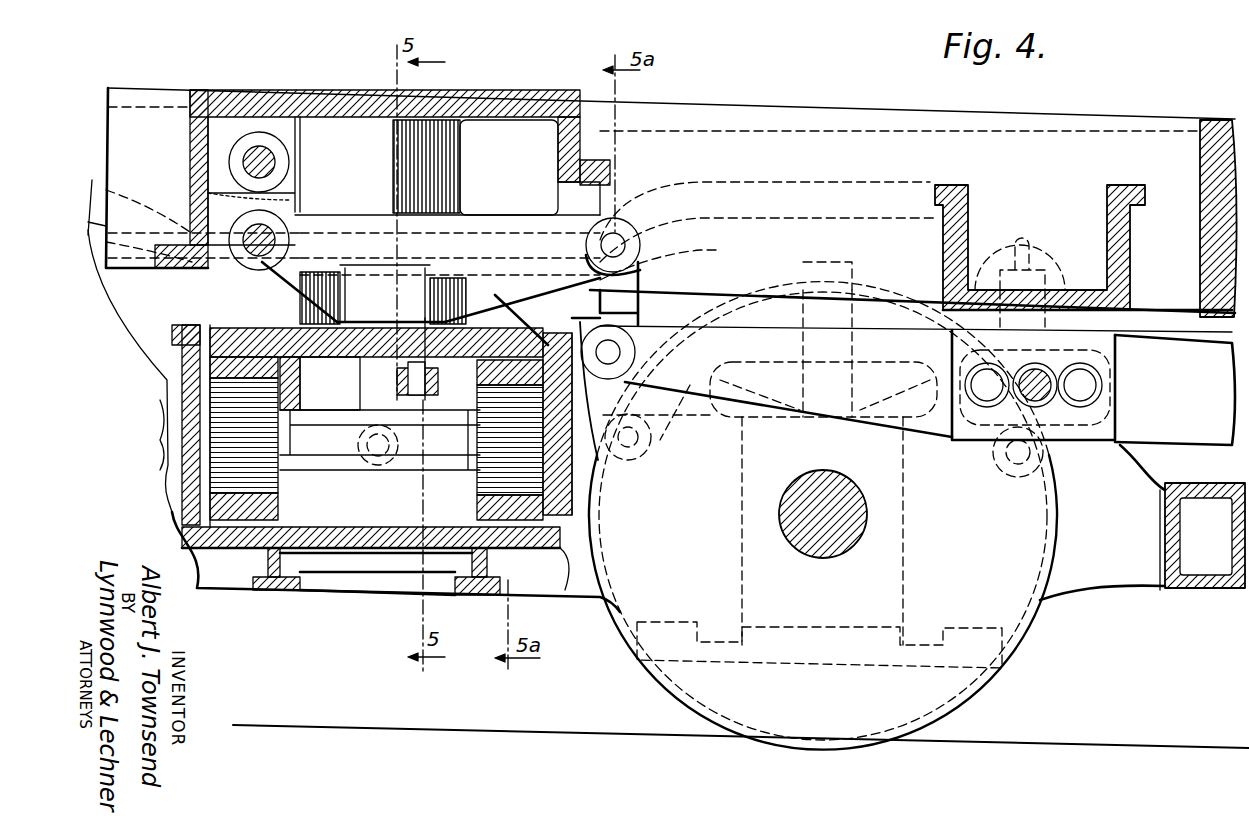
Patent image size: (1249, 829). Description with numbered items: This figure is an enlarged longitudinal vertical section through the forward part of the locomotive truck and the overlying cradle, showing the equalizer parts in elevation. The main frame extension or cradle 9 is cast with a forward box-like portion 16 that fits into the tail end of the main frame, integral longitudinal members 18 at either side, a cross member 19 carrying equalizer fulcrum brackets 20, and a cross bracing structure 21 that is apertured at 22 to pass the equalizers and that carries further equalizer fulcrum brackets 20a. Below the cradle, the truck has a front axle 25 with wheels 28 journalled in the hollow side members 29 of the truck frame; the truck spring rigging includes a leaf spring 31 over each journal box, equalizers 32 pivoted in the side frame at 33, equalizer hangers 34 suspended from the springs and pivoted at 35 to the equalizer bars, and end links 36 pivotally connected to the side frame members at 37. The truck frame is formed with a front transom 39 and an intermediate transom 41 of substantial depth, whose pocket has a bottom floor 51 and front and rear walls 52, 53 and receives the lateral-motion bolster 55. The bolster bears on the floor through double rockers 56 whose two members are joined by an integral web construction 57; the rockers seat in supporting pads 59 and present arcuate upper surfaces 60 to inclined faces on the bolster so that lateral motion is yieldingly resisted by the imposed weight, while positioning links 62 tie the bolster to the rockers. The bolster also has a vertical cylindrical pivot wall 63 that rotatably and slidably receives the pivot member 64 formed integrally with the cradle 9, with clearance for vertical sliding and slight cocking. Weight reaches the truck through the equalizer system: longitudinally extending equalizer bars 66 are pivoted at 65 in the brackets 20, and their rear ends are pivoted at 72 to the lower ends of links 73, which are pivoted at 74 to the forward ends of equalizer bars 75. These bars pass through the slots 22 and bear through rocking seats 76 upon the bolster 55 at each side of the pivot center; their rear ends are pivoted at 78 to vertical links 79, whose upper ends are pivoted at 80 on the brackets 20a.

The main frame extension or cradle 9 is at (336, 92).
The forward box-like portion 16 is at (1205, 164).
The longitudinal members 18 is at (916, 231).
The cross member 19 is at (1120, 240).
The equalizer fulcrum brackets 20 is at (1125, 328).
The equalizer fulcrum brackets 20a is at (275, 128).
The cross bracing structure 21 is at (190, 136).
The apertures or slots 22 is at (563, 198).
The front axle 25 is at (805, 556).
The wheels 28 is at (672, 688).
The side members of the truck frame 29 is at (550, 569).
The leaf spring 31 is at (712, 400).
The equalizers 32 is at (158, 436).
The equalizer pivot 33 is at (380, 463).
The equalizer hangers 34 is at (660, 250).
The hanger pivot 35 is at (636, 458).
The end links 36 is at (1040, 225).
The end link pivot 37 is at (1012, 470).
The front member or transom 39 is at (1180, 537).
The intermediate transom structure 41 is at (285, 573).
The bottom floor 51 is at (350, 552).
The front wall 52 is at (572, 510).
The rear wall 53 is at (210, 480).
The lateral-motion bolster 55 is at (235, 335).
The double rockers 56 is at (280, 492).
The integral web construction 57 is at (335, 470).
The supporting pads 59 is at (210, 508).
The arcuate upper surfaces 60 is at (200, 382).
The positioning links 62 is at (392, 360).
The vertical cylindrical pivot wall 63 is at (330, 383).
The pivot member 64 is at (285, 181).
The equalizer bar pivots 65 is at (1010, 405).
The equalizer bars 66 is at (1137, 467).
The rear pivot of equalizer bars 72 is at (604, 365).
The links 73 is at (640, 302).
The link pivot 74 is at (617, 233).
The equalizer bars 75 is at (482, 218).
The rocking seats 76 is at (357, 325).
The rear pivot 78 is at (262, 270).
The vertical links 79 is at (280, 212).
The upper link pivot 80 is at (275, 160).